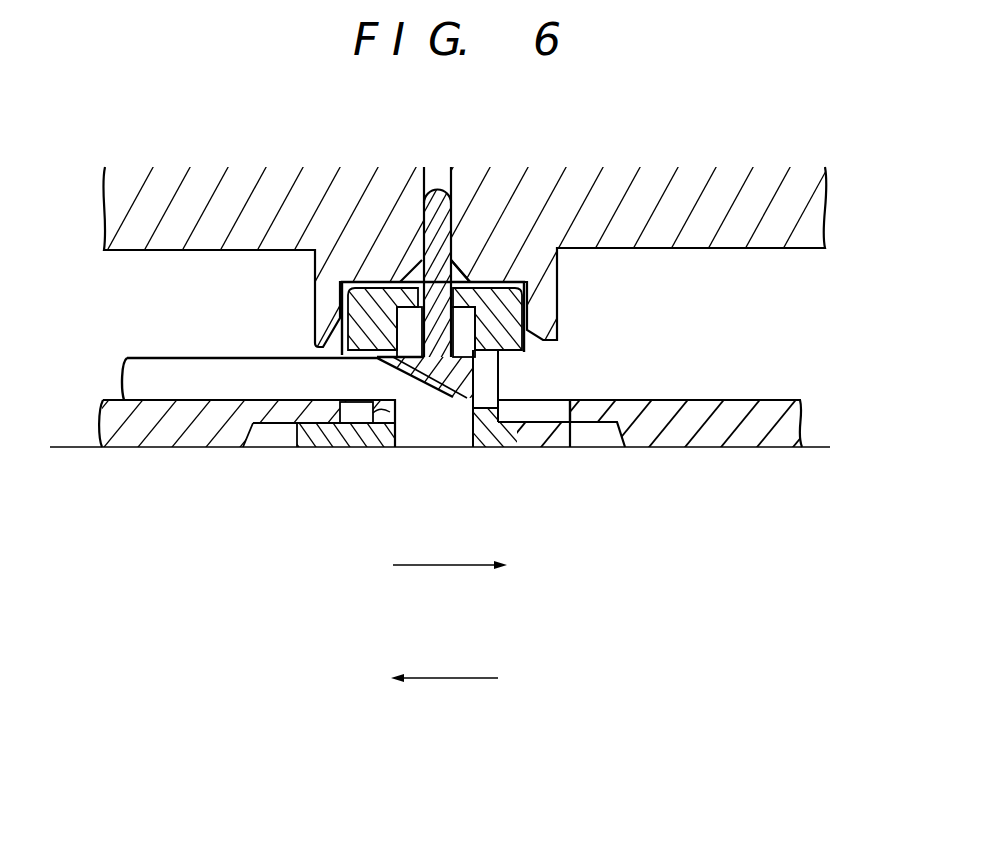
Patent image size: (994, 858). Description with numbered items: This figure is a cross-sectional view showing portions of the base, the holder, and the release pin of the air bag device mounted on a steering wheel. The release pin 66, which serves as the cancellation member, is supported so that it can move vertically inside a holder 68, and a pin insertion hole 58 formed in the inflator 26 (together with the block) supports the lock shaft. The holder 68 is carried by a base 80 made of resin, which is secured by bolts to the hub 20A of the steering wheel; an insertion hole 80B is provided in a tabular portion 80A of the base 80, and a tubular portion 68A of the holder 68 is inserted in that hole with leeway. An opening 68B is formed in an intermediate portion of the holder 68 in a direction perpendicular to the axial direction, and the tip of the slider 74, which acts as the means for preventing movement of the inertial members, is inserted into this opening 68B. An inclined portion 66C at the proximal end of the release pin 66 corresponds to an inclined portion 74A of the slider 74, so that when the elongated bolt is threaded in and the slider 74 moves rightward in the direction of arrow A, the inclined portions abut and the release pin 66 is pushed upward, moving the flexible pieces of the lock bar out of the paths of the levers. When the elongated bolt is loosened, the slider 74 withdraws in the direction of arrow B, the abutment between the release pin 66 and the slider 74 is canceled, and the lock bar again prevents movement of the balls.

The inflator 26 is at (752, 255).
The pin insertion hole 58 is at (450, 183).
The release pin 66 is at (406, 213).
The inclined portion of release pin 66C is at (455, 262).
The holder 68 is at (500, 353).
The tubular portion of holder 68A is at (492, 375).
The opening of holder 68B is at (368, 418).
The slider 74 is at (283, 390).
The inclined portion of slider 74A is at (443, 343).
The base 80 is at (685, 386).
The tabular portion of base 80A is at (755, 400).
The insertion hole of base 80B is at (525, 411).
The hub of steering wheel 20A is at (803, 432).
The direction of arrow A is at (457, 568).
The direction of arrow B is at (458, 681).